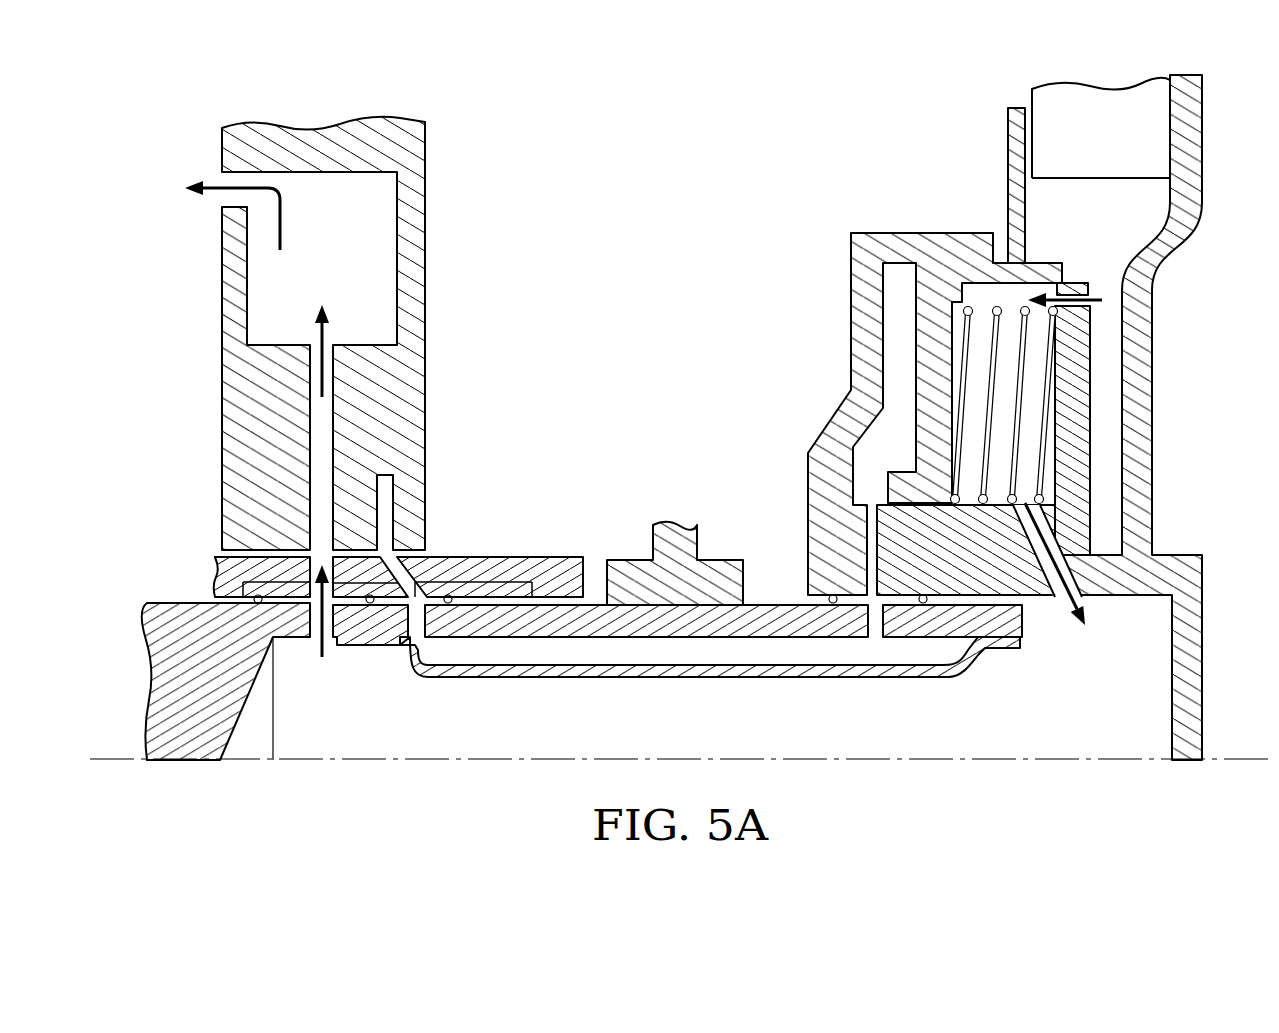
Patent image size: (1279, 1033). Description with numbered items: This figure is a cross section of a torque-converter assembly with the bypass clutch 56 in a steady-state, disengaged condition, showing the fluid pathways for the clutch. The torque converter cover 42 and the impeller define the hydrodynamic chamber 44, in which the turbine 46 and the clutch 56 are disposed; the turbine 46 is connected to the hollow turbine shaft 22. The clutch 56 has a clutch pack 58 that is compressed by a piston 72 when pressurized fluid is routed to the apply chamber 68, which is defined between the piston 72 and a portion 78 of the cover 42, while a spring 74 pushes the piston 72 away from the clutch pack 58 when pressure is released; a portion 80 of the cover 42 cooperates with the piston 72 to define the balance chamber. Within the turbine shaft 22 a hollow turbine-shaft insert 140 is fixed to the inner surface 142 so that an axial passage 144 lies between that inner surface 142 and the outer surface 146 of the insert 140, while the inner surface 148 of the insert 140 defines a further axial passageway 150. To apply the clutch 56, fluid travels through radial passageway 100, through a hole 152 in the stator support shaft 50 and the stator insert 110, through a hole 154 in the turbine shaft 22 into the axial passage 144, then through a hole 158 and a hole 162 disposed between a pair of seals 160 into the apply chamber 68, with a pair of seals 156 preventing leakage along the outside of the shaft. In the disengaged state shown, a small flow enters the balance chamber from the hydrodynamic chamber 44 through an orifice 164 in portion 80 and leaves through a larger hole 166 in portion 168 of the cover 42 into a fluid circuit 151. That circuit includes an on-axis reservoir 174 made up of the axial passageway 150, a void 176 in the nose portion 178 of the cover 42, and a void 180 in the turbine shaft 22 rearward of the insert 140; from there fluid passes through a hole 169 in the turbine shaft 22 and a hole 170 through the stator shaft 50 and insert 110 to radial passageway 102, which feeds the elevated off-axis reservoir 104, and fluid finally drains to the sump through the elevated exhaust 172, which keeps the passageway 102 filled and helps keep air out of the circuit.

The turbine shaft 22 is at (1022, 622).
The torque converter cover 42 is at (1162, 320).
The hydrodynamic chamber 44 is at (654, 363).
The turbine 46 is at (700, 545).
The stator support shaft 50 is at (545, 556).
The bypass clutch 56 is at (955, 128).
The clutch pack 58 is at (1112, 152).
The apply chamber 68 is at (900, 305).
The piston 72 is at (1008, 190).
The spring 74 is at (1040, 412).
The portion of the cover 78 is at (850, 320).
The portion of the cover 80 is at (1075, 405).
The radial passageway 100 is at (390, 490).
The radial passageway 102 is at (333, 425).
The off-axis reservoir 104 is at (338, 272).
The stator insert 110 is at (492, 587).
The turbine-shaft insert 140 is at (905, 678).
The inner surface 142 is at (558, 642).
The axial passage 144 is at (763, 665).
The outer surface 146 is at (537, 655).
The inner surface 148 is at (560, 680).
The axial passageway 150 is at (693, 733).
The fluid circuit 151 is at (920, 742).
The hole 152 is at (405, 560).
The hole 154 is at (412, 640).
The seals 156 is at (370, 612).
The hole 158 is at (878, 615).
The seals 160 is at (828, 598).
The hole 162 is at (868, 545).
The orifice 164 is at (1092, 298).
The hole 166 is at (1047, 533).
The portion of the cover 168 is at (1000, 543).
The hole 169 is at (315, 617).
The hole 170 is at (315, 550).
The exhaust 172 is at (245, 206).
The on-axis reservoir 174 is at (782, 742).
The void 176 is at (1153, 643).
The nose portion 178 is at (1172, 578).
The void 180 is at (343, 733).